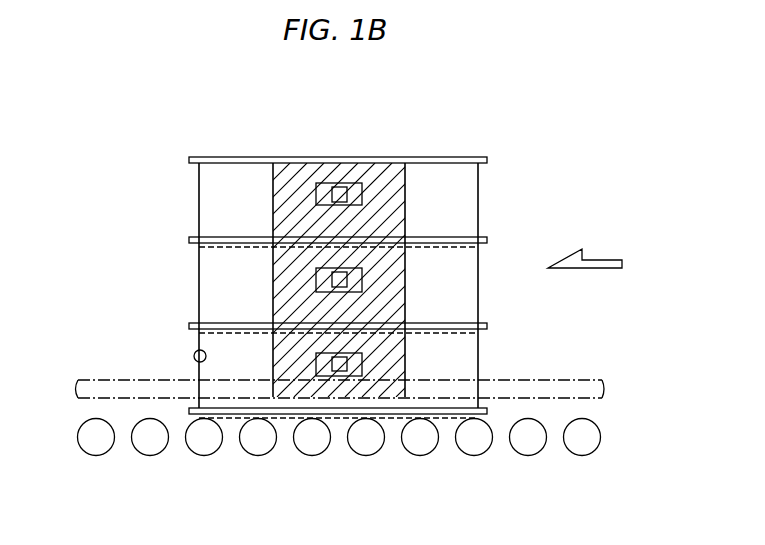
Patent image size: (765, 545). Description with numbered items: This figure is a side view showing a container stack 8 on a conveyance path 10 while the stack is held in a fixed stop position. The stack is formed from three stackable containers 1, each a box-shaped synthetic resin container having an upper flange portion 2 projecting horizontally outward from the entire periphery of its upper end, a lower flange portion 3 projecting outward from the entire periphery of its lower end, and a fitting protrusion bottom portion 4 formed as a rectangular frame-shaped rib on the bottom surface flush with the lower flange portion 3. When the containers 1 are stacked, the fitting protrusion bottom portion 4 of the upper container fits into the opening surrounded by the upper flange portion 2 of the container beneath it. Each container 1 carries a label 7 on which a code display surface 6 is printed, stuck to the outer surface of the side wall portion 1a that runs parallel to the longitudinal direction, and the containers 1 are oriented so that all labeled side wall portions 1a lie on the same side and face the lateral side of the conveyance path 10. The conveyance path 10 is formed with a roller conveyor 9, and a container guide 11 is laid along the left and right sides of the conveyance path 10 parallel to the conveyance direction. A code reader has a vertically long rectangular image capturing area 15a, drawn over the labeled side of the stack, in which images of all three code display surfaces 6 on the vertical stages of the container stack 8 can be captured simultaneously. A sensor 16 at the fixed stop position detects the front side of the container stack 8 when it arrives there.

The stackable container 1 is at (345, 285).
The side wall portion 1a is at (478, 213).
The upper flange portion 2 is at (338, 215).
The lower flange portion 3 is at (228, 237).
The fitting protrusion bottom portion 4 is at (449, 247).
The code display surface 6 is at (343, 202).
The label 7 is at (316, 194).
The container stack 8 is at (286, 156).
The roller conveyor 9 is at (313, 457).
The conveyance path 10 is at (137, 408).
The container guide 11 is at (562, 387).
The image capturing area 15a is at (405, 183).
The sensor 16 is at (193, 356).